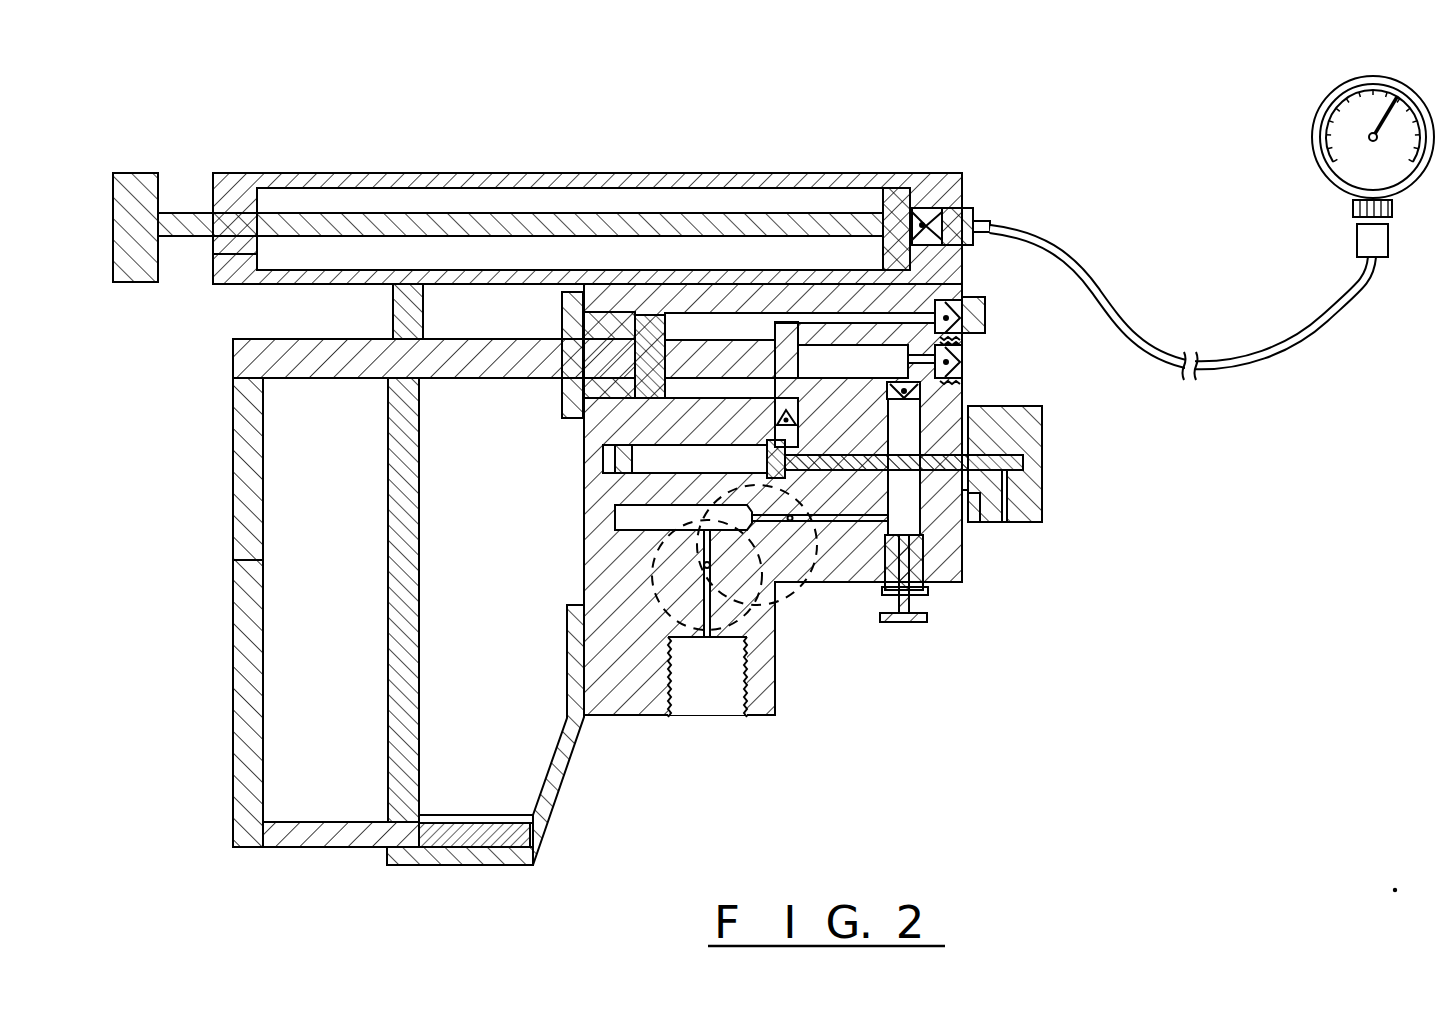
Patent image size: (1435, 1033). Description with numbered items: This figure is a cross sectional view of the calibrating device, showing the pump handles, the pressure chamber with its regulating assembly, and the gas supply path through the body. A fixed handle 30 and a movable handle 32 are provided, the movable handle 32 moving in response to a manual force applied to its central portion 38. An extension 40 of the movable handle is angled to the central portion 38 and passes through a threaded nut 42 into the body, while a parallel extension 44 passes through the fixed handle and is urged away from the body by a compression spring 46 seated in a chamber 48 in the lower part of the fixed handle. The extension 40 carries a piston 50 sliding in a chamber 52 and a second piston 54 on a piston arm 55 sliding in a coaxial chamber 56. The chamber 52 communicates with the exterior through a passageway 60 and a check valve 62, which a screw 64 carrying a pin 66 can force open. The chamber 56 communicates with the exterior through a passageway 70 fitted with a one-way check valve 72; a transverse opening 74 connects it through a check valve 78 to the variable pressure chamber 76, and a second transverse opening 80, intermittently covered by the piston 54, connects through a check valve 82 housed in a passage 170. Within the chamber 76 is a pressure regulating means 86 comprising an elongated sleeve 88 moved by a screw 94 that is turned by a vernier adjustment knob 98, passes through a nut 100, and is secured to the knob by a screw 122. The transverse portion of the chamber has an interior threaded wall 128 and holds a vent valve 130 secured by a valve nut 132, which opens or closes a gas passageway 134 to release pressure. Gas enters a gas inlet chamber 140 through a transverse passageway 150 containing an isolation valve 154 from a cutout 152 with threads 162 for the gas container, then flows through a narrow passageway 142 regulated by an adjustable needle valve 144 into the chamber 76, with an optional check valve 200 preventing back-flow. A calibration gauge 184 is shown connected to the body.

The handle 30 is at (402, 602).
The handle 32 is at (250, 458).
The central portion 38 is at (240, 648).
The extension 40 is at (263, 345).
The threaded nut 42 is at (565, 307).
The parallel extension 44 is at (295, 838).
The compression spring 46 is at (440, 837).
The chamber 48 is at (478, 837).
The piston 50 is at (652, 318).
The chamber 52 is at (733, 328).
The second piston 54 is at (788, 345).
The piston arm 55 is at (703, 360).
The chamber 56 is at (818, 352).
The passageway 60 is at (975, 250).
The check valve 62 is at (990, 245).
The screw 64 is at (984, 310).
The pin 66 is at (955, 296).
The passageway 70 is at (962, 328).
The check valve 72 is at (962, 350).
The transverse opening 74 is at (962, 366).
The variable pressure chamber 76 is at (905, 430).
The check valve 78 is at (940, 392).
The transverse opening 80 is at (775, 388).
The check valve 82 is at (773, 412).
The pressure regulating means 86 is at (605, 467).
The elongated sleeve 88 is at (620, 497).
The screw 94 is at (1042, 465).
The vernier adjustment knob 98 is at (1042, 492).
The nut 100 is at (990, 524).
The screw 122 is at (1040, 520).
The interior threaded wall 128 is at (922, 567).
The vent valve 130 is at (925, 620).
The valve nut 132 is at (925, 598).
The gas passageway 134 is at (880, 543).
The gas inlet chamber 140 is at (630, 517).
The narrow passageway 142 is at (843, 523).
The adjustable needle valve 144 is at (813, 520).
The transverse passageway 150 is at (703, 542).
The cutout 152 is at (700, 690).
The isolation valve 154 is at (700, 568).
The threads 162 is at (740, 690).
The passage 170 is at (810, 433).
The calibration gauge 184 is at (1315, 110).
The check valve 200 is at (737, 593).